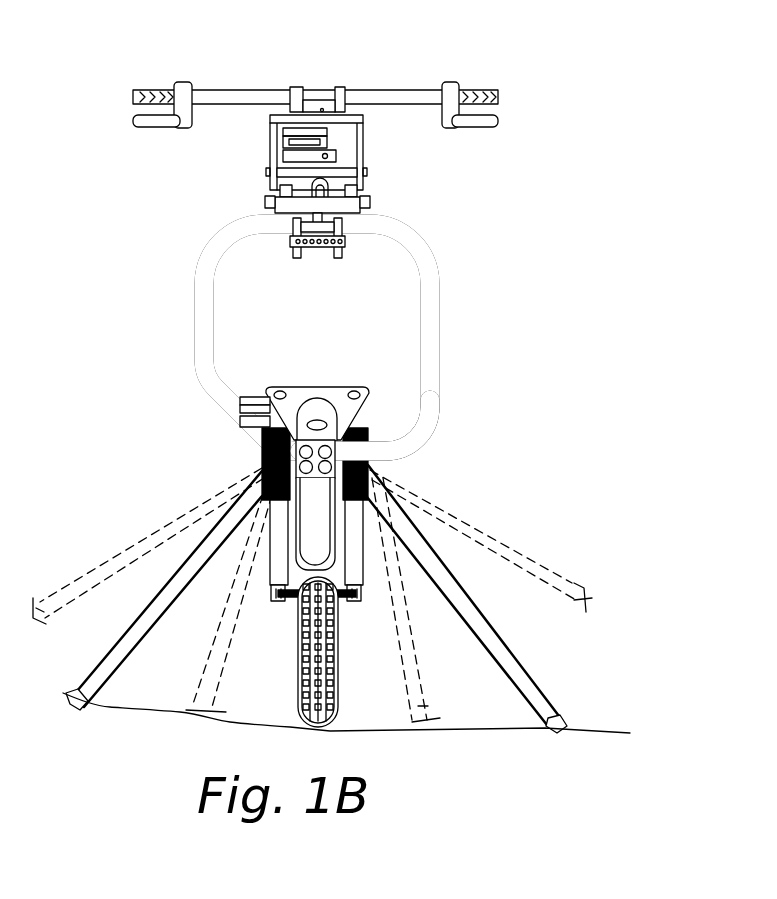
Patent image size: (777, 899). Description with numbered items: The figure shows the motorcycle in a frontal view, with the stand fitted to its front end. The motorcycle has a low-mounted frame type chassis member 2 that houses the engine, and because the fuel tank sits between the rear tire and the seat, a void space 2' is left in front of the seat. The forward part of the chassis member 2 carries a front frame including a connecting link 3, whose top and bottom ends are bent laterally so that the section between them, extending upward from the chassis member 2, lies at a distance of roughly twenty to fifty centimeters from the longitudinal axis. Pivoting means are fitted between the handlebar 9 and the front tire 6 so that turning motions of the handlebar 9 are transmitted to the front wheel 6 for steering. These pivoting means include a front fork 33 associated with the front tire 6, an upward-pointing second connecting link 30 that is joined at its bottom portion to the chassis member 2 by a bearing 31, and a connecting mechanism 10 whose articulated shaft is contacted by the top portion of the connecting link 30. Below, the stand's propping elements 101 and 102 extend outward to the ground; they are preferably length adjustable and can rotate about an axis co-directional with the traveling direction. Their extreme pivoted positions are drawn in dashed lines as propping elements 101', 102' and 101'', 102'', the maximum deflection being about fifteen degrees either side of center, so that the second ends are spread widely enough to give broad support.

The chassis member 2 is at (383, 478).
The void space 2' is at (321, 327).
The connecting link 3 is at (432, 338).
The front tire 6 is at (338, 677).
The handlebar 9 is at (375, 96).
The connecting mechanism 10 is at (373, 115).
The second connecting link 30 is at (203, 320).
The bearing 31 is at (262, 428).
The front fork 33 is at (355, 548).
The propping element 101 is at (488, 599).
The propping element in extreme position 101' is at (451, 604).
The propping element in extreme position 101'' is at (534, 541).
The propping element 102 is at (153, 590).
The propping element in extreme position 102' is at (148, 540).
The propping element in extreme position 102'' is at (206, 596).